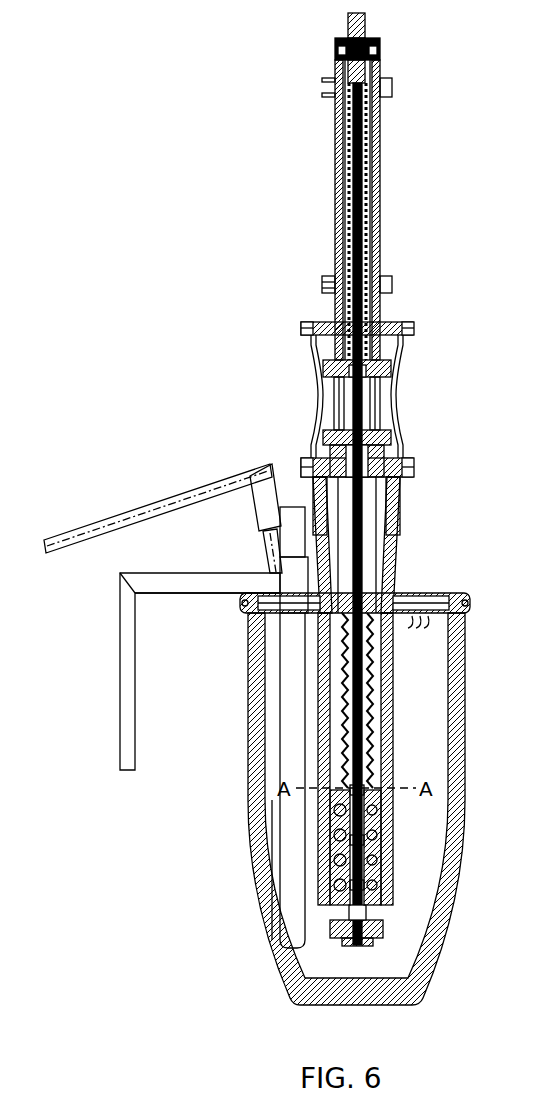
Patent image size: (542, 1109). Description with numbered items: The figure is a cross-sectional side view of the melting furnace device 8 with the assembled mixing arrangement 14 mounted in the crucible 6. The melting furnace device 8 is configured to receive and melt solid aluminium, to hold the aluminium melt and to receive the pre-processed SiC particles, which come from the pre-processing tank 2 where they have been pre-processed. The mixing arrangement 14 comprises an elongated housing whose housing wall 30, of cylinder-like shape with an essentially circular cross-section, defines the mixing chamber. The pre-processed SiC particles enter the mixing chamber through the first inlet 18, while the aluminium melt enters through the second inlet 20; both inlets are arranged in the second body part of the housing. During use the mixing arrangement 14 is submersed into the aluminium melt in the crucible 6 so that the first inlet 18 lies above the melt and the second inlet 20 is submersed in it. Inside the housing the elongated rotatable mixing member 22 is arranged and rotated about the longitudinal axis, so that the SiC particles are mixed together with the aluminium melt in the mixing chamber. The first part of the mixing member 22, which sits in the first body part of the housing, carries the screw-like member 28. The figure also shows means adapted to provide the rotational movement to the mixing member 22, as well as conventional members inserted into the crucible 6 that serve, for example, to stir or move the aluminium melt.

The mixing arrangement 14 is at (442, 480).
The first inlet 18 is at (382, 563).
The rotatable mixing member 22 is at (356, 598).
The pre-processing tank 2 is at (355, 610).
The melting furnace device 8 is at (127, 665).
The crucible 6 is at (257, 788).
The second inlet 20 is at (384, 739).
The housing wall 30 is at (385, 683).
The screw-like member 28 is at (372, 812).